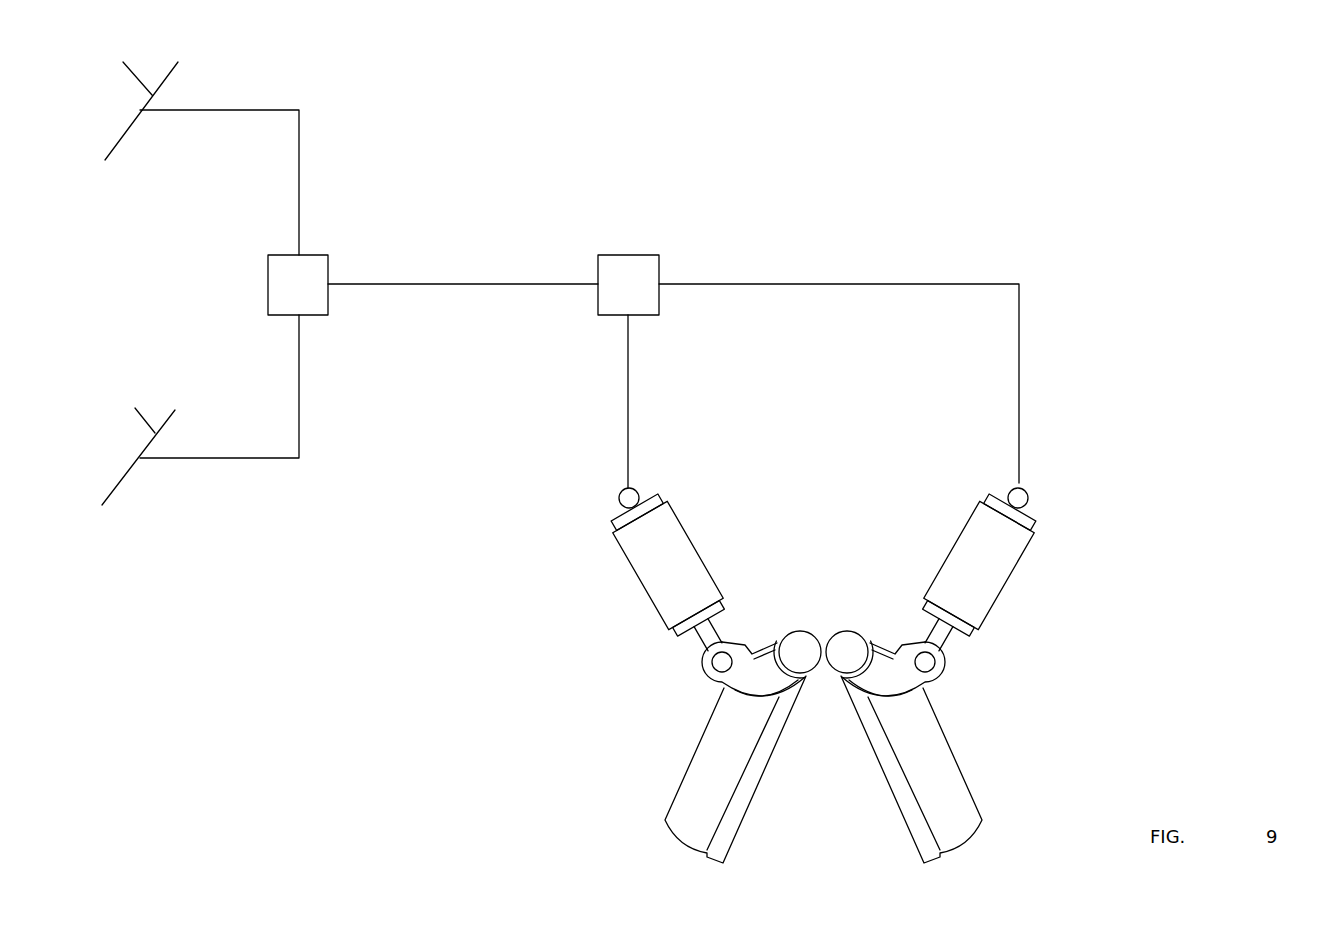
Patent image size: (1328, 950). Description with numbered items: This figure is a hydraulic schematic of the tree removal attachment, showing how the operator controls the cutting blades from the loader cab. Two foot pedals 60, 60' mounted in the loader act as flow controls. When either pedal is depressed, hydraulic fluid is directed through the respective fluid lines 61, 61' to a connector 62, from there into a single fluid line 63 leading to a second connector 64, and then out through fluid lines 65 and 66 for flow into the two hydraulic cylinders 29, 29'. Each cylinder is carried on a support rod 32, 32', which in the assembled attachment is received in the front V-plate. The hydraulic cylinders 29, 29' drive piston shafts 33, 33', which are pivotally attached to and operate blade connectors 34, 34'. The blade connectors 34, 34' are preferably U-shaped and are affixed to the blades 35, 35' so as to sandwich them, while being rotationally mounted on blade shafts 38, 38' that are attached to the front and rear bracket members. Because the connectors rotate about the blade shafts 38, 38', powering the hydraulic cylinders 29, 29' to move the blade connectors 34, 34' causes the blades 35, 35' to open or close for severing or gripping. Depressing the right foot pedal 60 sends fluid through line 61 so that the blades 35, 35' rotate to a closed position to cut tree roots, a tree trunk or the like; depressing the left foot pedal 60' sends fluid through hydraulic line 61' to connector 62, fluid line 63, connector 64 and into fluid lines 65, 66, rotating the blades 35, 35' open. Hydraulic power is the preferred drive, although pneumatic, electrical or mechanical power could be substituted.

The right foot pedal 60 is at (138, 445).
The left foot pedal 60' is at (139, 99).
The fluid line 61 is at (246, 386).
The fluid line 61' is at (267, 182).
The connector 62 is at (290, 287).
The fluid line 63 is at (452, 284).
The connector 64 is at (638, 267).
The fluid line 65 is at (850, 284).
The fluid line 66 is at (628, 380).
The support rod 32 is at (590, 482).
The support rod 32' is at (1048, 470).
The hydraulic cylinder 29 is at (657, 577).
The hydraulic cylinder 29' is at (1002, 577).
The piston shaft 33 is at (686, 663).
The piston shaft 33' is at (967, 660).
The blade connector 34 is at (732, 693).
The blade connector 34' is at (921, 677).
The blade shaft 38 is at (799, 626).
The blade shaft 38' is at (853, 618).
The blade 35 is at (705, 769).
The blade 35' is at (936, 769).